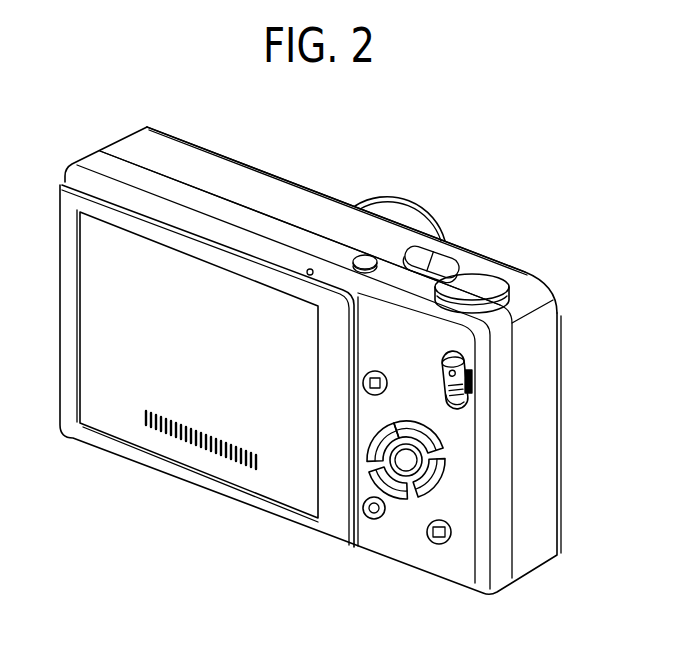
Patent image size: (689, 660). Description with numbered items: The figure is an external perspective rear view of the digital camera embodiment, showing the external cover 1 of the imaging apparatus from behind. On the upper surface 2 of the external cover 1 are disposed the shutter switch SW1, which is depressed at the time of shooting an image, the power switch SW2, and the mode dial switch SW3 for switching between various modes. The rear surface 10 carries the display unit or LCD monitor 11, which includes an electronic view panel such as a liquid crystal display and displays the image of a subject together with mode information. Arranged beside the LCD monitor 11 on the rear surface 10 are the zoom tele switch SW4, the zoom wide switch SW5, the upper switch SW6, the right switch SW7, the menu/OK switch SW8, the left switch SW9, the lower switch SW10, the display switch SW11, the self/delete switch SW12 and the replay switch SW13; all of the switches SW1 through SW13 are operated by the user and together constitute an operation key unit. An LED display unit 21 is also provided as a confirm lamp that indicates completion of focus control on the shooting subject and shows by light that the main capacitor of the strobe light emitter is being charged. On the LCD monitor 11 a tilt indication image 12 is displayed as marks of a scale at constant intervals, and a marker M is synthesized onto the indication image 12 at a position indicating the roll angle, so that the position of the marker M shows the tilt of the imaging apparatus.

The external cover 1 is at (553, 498).
The upper surface 2 is at (207, 157).
The rear surface 10 is at (262, 505).
The display unit (LCD monitor) 11 is at (92, 328).
The tilt indication image 12 is at (147, 420).
The marker M is at (180, 435).
The LED display unit 21 is at (311, 268).
The shutter switch (release switch) SW1 is at (437, 256).
The power switch SW2 is at (365, 254).
The mode dial switch SW3 is at (478, 277).
The zoom [tele] switch SW4 is at (464, 364).
The zoom [wide] switch SW5 is at (464, 404).
The upper switch SW6 is at (399, 419).
The right switch SW7 is at (443, 466).
The menu/OK switch SW8 is at (400, 500).
The left switch SW9 is at (368, 450).
The lower switch SW10 is at (413, 500).
The display switch SW11 is at (452, 532).
The self/delete switch SW12 is at (367, 500).
The replay switch SW13 is at (363, 379).